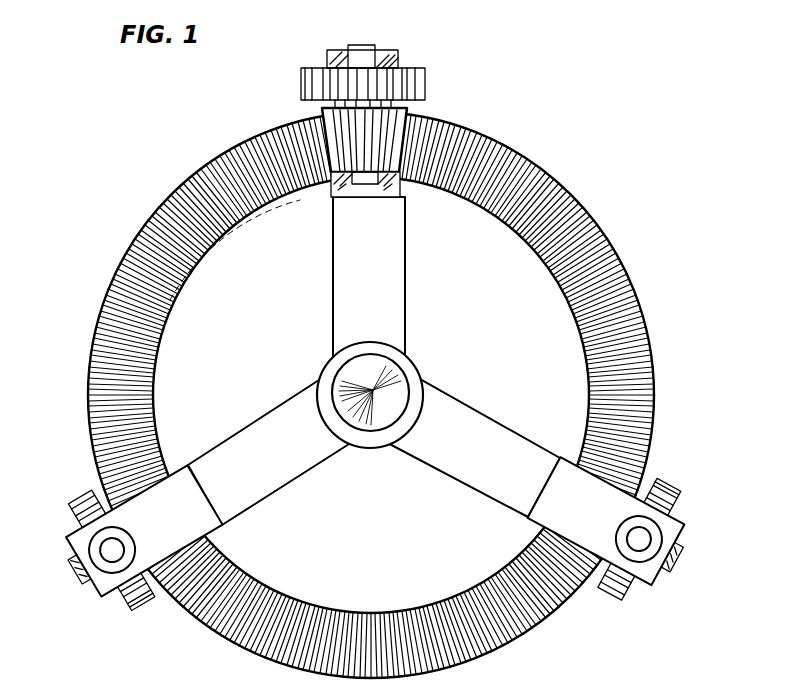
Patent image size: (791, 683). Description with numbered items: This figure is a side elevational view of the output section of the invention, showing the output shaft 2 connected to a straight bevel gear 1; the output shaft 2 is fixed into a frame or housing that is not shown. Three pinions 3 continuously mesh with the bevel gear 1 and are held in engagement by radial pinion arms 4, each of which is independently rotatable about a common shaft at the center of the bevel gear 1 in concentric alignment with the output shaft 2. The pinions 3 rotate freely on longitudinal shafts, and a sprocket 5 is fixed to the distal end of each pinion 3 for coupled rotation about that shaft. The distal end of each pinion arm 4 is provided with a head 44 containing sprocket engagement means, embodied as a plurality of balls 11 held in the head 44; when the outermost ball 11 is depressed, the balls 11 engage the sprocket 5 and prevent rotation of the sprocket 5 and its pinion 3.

The straight bevel gear 1 is at (596, 214).
The output shaft 2 is at (370, 395).
The pinion 3 is at (347, 133).
The radial pinion arm 4 is at (375, 397).
The sprocket 5 is at (427, 88).
The ball 11 is at (106, 550).
The head 44 is at (105, 568).